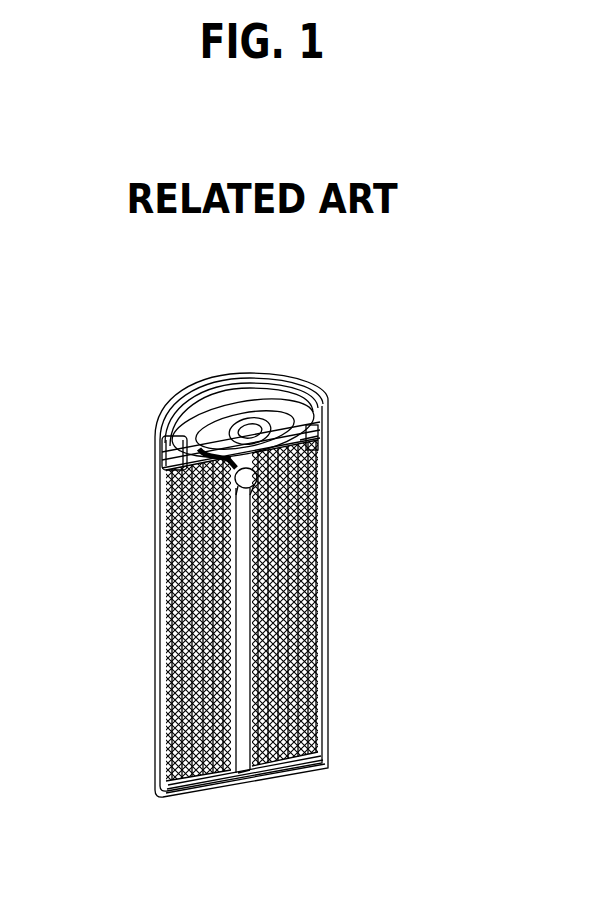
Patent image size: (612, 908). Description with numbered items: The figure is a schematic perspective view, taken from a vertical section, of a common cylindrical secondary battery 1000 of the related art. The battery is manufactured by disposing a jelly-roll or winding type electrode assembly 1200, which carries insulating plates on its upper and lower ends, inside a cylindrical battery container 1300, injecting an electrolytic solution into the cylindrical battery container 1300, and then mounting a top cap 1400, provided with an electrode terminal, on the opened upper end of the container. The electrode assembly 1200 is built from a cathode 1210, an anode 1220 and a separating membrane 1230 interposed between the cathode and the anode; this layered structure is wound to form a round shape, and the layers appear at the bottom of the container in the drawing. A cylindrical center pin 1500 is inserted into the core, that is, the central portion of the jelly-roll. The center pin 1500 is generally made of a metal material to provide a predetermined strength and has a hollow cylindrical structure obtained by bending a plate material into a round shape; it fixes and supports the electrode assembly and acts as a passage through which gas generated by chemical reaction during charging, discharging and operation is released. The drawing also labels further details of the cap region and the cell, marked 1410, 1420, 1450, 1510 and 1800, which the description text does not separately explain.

The secondary battery 1000 is at (136, 375).
The electrode assembly 1200 is at (283, 809).
The cathode 1210 is at (283, 786).
The anode 1220 is at (320, 770).
The separating membrane 1230 is at (300, 770).
The cylindrical battery container 1300 is at (325, 570).
The top cap 1400 is at (337, 395).
The cap plate 1410 is at (320, 392).
The gasket 1420 is at (158, 452).
The insulating member 1450 is at (320, 423).
The center pin 1500 is at (167, 633).
The center pin 1510 is at (260, 797).
The electrode tab 1800 is at (157, 480).